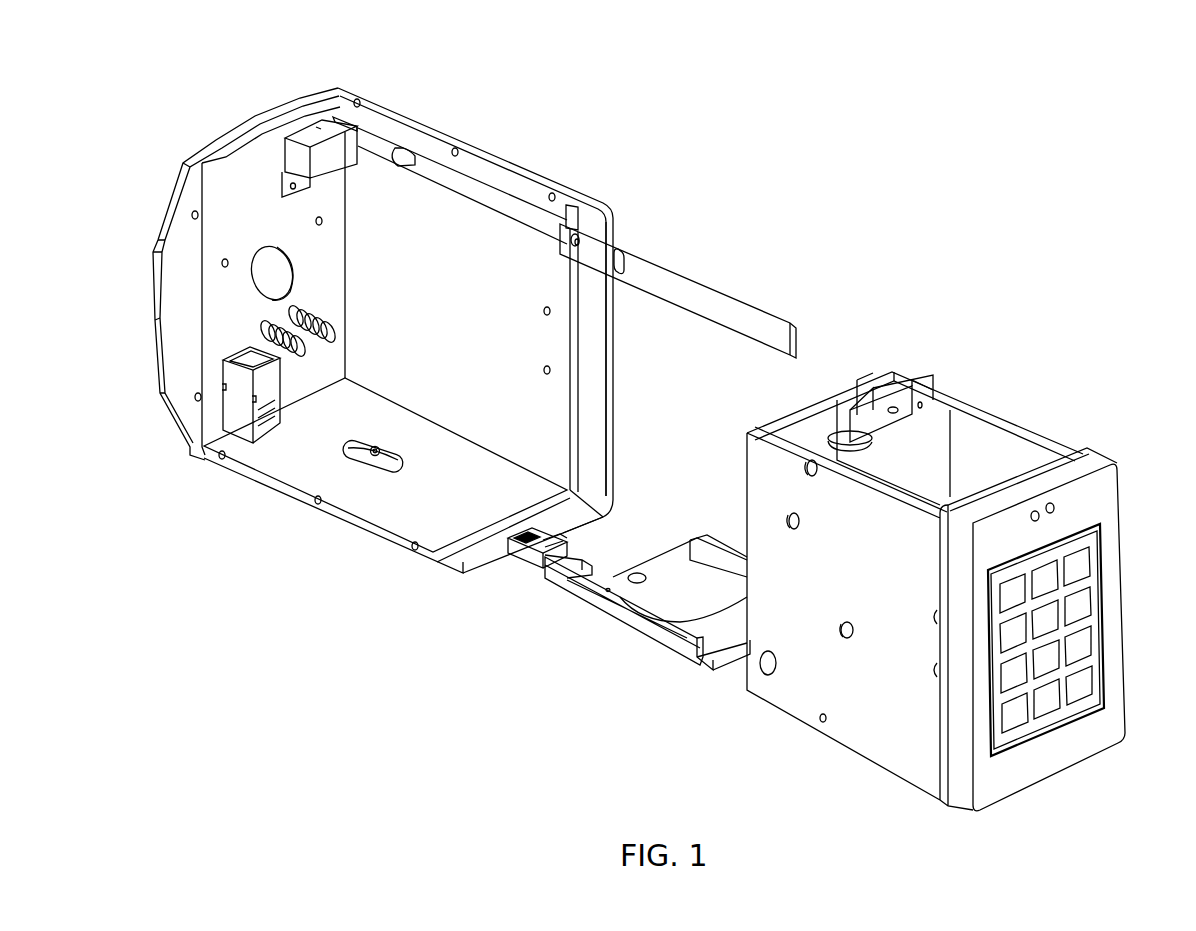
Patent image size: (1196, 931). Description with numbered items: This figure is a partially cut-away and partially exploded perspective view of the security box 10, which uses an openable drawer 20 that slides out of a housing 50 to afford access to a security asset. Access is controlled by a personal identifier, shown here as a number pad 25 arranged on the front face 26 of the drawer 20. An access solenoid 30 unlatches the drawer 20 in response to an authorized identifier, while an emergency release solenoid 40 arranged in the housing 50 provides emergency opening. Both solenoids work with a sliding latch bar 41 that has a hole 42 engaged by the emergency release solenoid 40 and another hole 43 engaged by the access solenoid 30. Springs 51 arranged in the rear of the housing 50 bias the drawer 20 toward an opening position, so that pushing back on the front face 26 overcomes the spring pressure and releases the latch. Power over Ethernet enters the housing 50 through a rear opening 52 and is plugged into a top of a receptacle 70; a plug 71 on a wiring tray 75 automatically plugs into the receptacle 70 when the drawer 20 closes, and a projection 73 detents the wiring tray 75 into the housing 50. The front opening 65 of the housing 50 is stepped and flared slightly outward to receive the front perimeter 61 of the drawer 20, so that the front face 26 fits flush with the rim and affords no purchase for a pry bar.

The security box 10 is at (957, 87).
The drawer 20 is at (1036, 387).
The number pad 25 is at (1108, 617).
The front face 26 is at (1078, 745).
The access solenoid 30 is at (847, 418).
The emergency release solenoid 40 is at (322, 130).
The sliding latch bar 41 is at (722, 310).
The hole 42 is at (573, 241).
The hole 43 is at (622, 262).
The housing 50 is at (544, 126).
The springs 51 is at (278, 322).
The rear opening 52 is at (267, 270).
The front perimeter 61 is at (960, 775).
The front opening 65 is at (600, 416).
The receptacle 70 is at (243, 420).
The plug 71 is at (528, 553).
The projection 73 is at (370, 452).
The wiring tray 75 is at (690, 645).